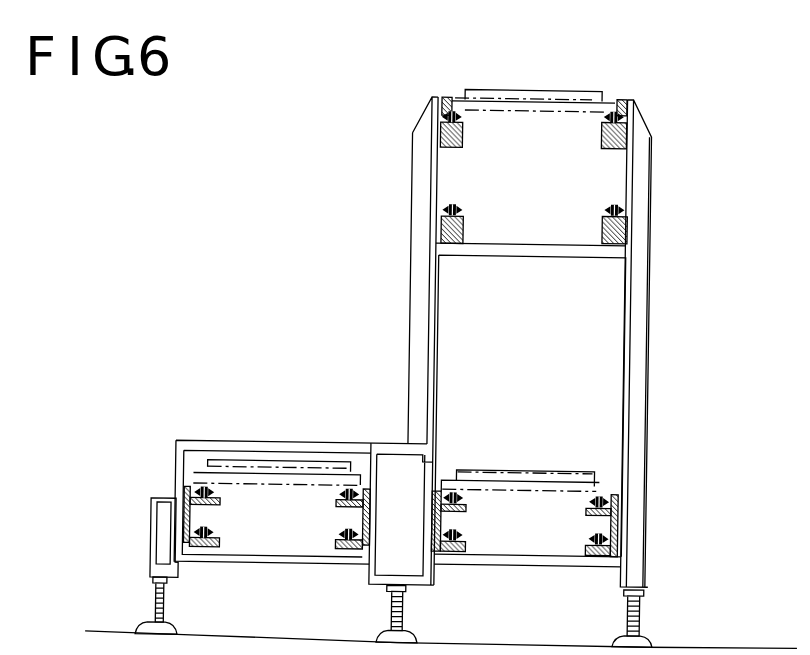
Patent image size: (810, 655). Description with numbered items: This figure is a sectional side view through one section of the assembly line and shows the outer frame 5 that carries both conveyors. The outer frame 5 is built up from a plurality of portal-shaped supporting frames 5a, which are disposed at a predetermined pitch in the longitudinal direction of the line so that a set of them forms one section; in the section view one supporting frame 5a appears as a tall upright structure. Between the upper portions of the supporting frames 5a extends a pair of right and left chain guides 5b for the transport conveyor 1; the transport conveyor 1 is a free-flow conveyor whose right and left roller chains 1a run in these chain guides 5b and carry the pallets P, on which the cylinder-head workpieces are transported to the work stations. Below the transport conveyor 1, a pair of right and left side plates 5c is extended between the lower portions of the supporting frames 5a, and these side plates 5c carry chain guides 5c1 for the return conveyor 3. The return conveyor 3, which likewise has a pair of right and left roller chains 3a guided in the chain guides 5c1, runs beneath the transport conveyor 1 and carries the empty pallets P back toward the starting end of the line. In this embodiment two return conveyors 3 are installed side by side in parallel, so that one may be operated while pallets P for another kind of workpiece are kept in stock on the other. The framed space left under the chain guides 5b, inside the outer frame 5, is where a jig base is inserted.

The transport conveyor 1 is at (566, 88).
The roller chains 1a is at (445, 98).
The pallets P is at (537, 97).
The return conveyor 3 is at (311, 462).
The roller chains 3a is at (203, 490).
The outer frame 5 is at (643, 112).
The supporting frames 5a is at (428, 290).
The chain guides 5b is at (462, 215).
The side plates 5c is at (186, 505).
The chain guides 5c1 is at (208, 545).